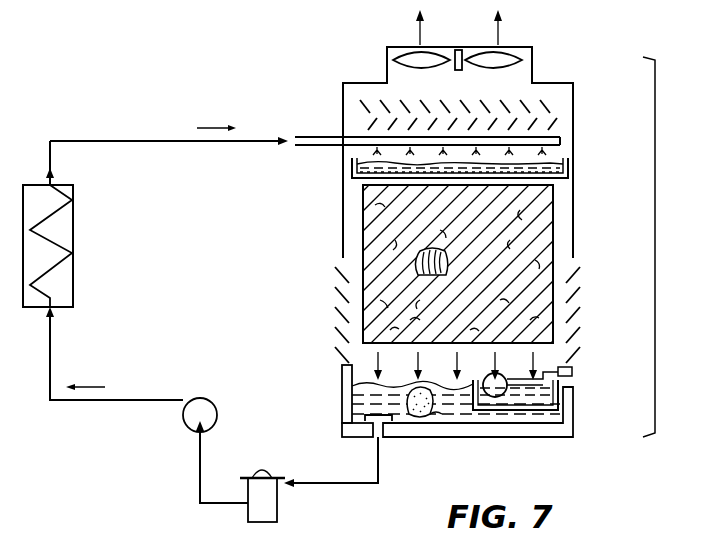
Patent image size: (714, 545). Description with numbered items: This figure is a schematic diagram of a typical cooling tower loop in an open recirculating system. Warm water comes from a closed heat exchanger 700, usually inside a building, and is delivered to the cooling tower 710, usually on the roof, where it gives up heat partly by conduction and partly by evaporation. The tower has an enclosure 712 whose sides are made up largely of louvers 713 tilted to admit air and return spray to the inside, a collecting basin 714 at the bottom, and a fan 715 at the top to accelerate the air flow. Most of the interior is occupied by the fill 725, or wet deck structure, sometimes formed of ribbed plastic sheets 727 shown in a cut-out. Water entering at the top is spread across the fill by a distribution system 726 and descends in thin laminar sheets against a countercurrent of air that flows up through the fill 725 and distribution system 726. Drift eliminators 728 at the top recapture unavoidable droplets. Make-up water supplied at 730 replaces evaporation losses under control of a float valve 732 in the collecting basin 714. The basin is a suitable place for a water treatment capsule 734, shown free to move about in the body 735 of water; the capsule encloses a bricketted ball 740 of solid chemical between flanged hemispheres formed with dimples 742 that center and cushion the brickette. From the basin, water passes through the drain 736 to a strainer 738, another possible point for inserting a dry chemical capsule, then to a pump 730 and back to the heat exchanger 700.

The heat exchanger 700 is at (73, 240).
The cooling tower 710 is at (657, 245).
The enclosure 712 is at (343, 100).
The louvers 713 is at (333, 339).
The collecting basin 714 is at (342, 396).
The fan 715 is at (519, 48).
The fill 725 is at (500, 237).
The distribution system 726 is at (569, 150).
The ribbed plastic sheets 727 is at (449, 270).
The drift eliminators 728 is at (569, 110).
The pump 730 is at (178, 421).
The float valve 732 is at (550, 398).
The water treatment capsule 734 is at (441, 416).
The body of water 735 is at (462, 423).
The drain 736 is at (366, 421).
The strainer 738 is at (280, 500).
The bricketted ball 740 is at (417, 419).
The dimples 742 is at (455, 364).